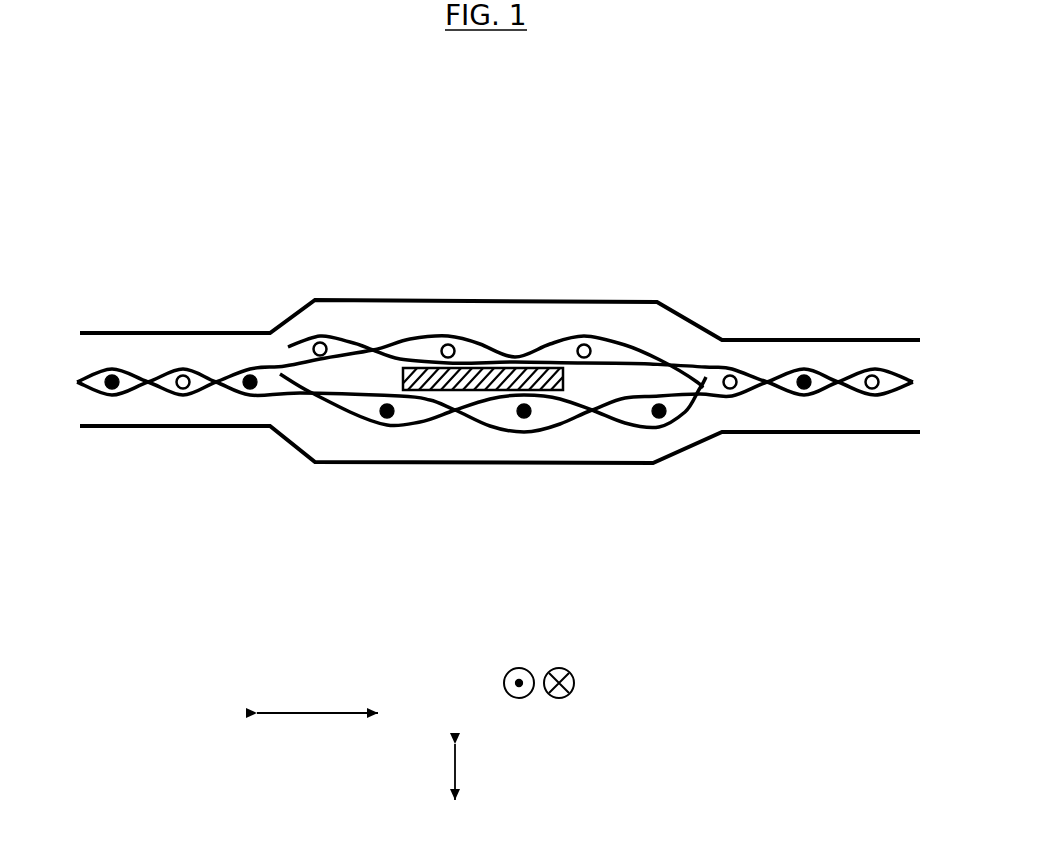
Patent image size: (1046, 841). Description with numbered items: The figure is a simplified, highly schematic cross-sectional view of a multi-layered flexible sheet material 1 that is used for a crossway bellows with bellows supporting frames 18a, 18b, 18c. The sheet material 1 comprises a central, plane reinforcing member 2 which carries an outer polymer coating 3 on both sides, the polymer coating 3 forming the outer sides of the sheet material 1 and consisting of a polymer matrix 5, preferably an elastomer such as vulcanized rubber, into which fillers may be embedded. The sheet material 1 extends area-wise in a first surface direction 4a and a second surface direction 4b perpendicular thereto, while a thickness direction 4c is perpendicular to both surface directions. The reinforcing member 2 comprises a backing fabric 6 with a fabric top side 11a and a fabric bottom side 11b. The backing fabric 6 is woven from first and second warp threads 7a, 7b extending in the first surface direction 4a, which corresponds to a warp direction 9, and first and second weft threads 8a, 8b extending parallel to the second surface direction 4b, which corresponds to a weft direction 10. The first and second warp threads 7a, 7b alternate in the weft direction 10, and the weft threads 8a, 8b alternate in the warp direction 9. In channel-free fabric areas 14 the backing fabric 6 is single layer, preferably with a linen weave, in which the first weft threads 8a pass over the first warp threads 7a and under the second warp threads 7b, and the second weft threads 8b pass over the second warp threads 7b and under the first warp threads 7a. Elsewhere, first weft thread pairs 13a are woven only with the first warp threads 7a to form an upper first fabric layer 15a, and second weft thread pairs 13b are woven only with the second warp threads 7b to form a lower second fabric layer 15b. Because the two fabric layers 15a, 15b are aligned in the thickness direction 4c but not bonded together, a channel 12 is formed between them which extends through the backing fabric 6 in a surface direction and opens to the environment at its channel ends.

The multi-layered flexible sheet material 1 is at (132, 238).
The reinforcing member 2 is at (414, 265).
The backing fabric 6 is at (652, 352).
The polymer coating 3 is at (829, 422).
The polymer matrix 5 is at (864, 352).
The channel-free fabric areas 14 is at (183, 352).
The first warp threads 7a is at (386, 418).
The second warp threads 7b is at (318, 341).
The first weft threads 8a is at (458, 358).
The second weft threads 8b is at (484, 360).
The first weft thread pairs 13a is at (430, 176).
The second weft thread pairs 13b is at (600, 590).
The first fabric layer 15a is at (406, 340).
The second fabric layer 15b is at (406, 420).
The fabric top side 11a is at (578, 326).
The fabric bottom side 11b is at (534, 440).
The channel 12 is at (350, 375).
The warp direction 9 is at (208, 405).
The bellows supporting frame 18a is at (484, 462).
The bellows supporting frame 18b is at (484, 462).
The bellows supporting frame 18c is at (456, 392).
The first surface direction 4a is at (568, 683).
The second surface direction 4b is at (317, 699).
The weft direction 10 is at (317, 699).
The thickness direction 4c is at (475, 772).